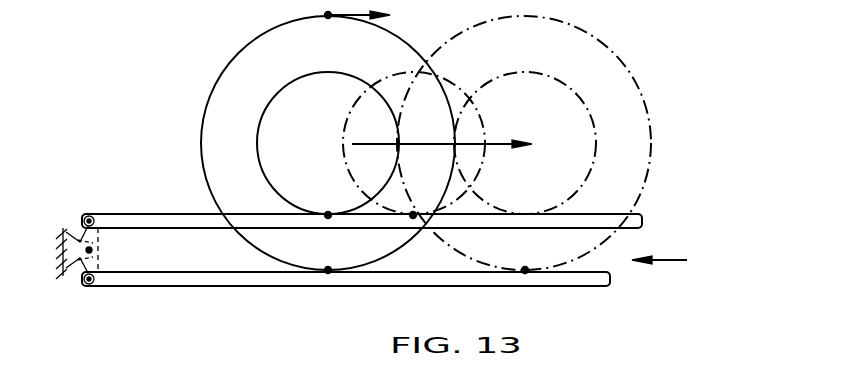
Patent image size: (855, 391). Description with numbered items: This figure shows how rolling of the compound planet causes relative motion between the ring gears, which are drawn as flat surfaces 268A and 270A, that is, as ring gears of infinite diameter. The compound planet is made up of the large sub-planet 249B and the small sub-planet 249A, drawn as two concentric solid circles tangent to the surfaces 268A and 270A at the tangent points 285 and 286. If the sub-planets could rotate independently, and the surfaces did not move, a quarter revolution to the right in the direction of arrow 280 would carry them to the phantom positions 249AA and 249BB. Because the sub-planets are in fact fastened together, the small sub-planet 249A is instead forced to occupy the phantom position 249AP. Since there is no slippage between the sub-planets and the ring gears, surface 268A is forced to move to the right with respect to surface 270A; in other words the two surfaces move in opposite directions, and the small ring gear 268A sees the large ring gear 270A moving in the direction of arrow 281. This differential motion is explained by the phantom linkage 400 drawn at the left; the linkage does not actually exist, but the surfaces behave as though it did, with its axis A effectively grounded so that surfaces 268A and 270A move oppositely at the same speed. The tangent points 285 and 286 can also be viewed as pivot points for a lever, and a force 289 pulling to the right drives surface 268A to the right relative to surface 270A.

The sub-planet 249B is at (237, 55).
The small sub-planet 249A is at (287, 85).
The phantom position 249AA is at (442, 74).
The phantom position 249AP is at (605, 46).
The phantom position 249BB is at (640, 90).
The force 289 is at (363, 16).
The arrow 280 is at (498, 145).
The flat surface 268A is at (128, 214).
The flat surface 270A is at (180, 272).
The phantom linkage 400 is at (97, 184).
The axis A is at (94, 250).
The tangent point 285 is at (328, 213).
The tangent point 286 is at (330, 268).
The arrow 281 is at (665, 260).